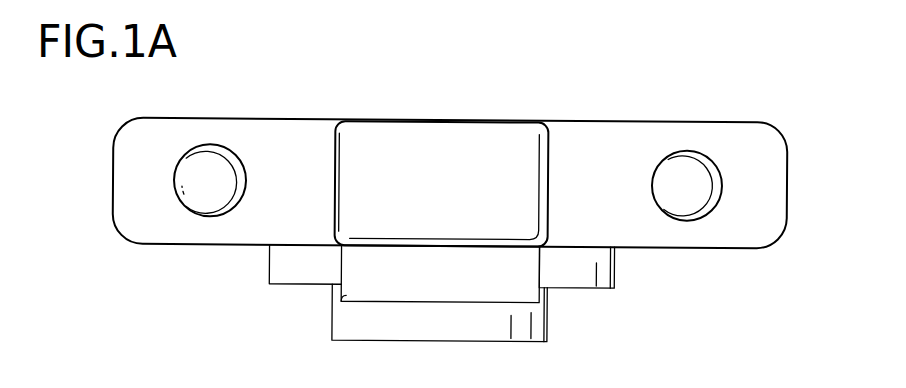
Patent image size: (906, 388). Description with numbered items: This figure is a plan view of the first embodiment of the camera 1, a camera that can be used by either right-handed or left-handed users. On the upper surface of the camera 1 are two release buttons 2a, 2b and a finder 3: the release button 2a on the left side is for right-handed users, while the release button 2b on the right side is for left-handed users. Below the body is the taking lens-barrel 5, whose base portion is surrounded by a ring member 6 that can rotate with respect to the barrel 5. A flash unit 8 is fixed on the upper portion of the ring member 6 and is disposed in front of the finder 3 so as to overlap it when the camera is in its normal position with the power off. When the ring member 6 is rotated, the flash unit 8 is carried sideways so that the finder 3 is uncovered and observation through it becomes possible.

The camera 1 is at (585, 112).
The release button 2a is at (207, 165).
The release button 2b is at (690, 162).
The finder 3 is at (488, 142).
The taking lens-barrel 5 is at (523, 325).
The ring member 6 is at (583, 272).
The flash unit 8 is at (355, 295).